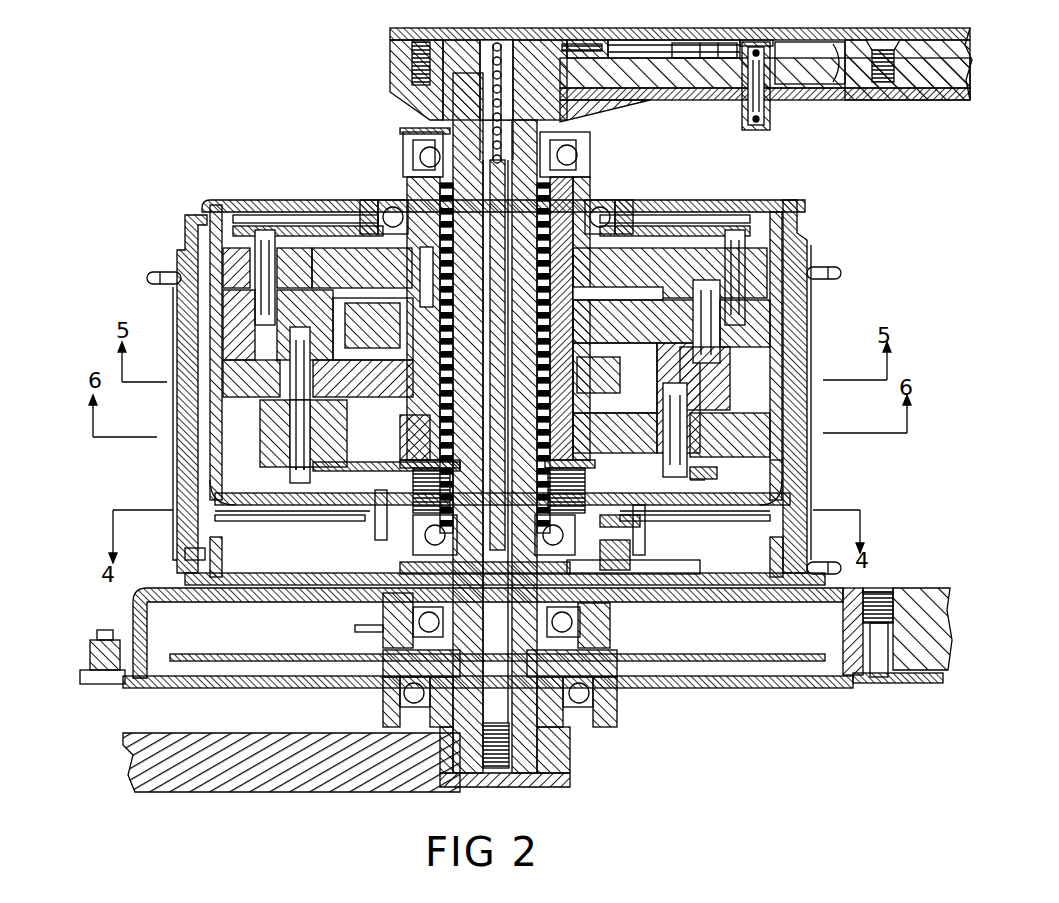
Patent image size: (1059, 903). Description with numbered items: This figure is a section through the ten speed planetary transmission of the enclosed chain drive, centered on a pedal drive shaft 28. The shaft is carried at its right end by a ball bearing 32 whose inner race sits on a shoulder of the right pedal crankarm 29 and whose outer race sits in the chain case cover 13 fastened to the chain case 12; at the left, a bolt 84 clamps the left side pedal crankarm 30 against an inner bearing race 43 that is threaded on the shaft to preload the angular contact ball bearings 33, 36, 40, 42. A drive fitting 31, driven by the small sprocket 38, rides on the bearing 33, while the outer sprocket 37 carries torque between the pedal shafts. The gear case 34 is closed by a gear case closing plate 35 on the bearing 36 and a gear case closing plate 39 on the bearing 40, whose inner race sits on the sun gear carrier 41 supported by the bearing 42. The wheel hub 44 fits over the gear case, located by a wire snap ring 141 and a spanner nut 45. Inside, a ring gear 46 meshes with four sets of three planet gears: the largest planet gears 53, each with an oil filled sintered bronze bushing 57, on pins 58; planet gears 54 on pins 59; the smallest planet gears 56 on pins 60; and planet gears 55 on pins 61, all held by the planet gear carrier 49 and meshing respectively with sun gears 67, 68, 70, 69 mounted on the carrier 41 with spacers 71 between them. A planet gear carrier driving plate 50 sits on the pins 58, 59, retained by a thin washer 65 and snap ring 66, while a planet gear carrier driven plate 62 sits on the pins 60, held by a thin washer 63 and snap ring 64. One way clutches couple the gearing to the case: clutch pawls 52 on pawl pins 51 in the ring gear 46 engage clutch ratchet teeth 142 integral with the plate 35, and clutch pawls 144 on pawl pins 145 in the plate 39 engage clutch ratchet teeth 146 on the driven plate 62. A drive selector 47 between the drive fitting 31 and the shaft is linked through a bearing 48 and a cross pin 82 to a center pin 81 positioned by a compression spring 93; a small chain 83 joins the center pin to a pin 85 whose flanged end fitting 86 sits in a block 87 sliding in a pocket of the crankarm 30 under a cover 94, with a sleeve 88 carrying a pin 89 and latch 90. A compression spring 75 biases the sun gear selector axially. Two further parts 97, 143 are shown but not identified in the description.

The chain case 12 is at (190, 602).
The chain case cover 13 is at (235, 690).
The pedal drive shaft 28 is at (560, 742).
The right pedal crankarm 29 is at (572, 782).
The left side pedal crankarm 30 is at (392, 80).
The drive fitting 31 is at (620, 612).
The ball bearing 32 is at (605, 700).
The angular contact ball bearing 33 is at (575, 625).
The gear case 34 is at (215, 518).
The gear case closing plate 35 is at (240, 575).
The angular contact ball bearing 36 is at (395, 608).
The outer sprocket 37 is at (740, 655).
The small sprocket 38 is at (365, 630).
The gear case closing plate 39 is at (282, 196).
The angular contact ball bearing 40 is at (388, 200).
The sun gear carrier 41 is at (405, 140).
The angular contact ball bearing 42 is at (580, 157).
The inner bearing race 43 is at (430, 130).
The wheel hub 44 is at (836, 268).
The spanner nut 45 is at (808, 215).
The ring gear 46 is at (235, 472).
The drive selector 47 is at (445, 560).
The bearing 48 is at (520, 535).
The planet gear carrier 49 is at (350, 440).
The planet gear carrier driving plate 50 is at (360, 466).
The pawl pins 51 is at (640, 560).
The clutch pawls 52 is at (640, 522).
The largest planet gears 53 is at (738, 413).
The planet gears 54 is at (355, 405).
The planet gears 55 is at (808, 300).
The smallest planet gears 56 is at (215, 253).
The oil filled sintered bronze bushing 57 is at (690, 450).
The pin 58 is at (783, 470).
The pin 59 is at (300, 425).
The pin 60 is at (188, 218).
The pin 61 is at (710, 325).
The planet gear carrier driven plate 62 is at (300, 215).
The thin washer 63 is at (235, 205).
The snap ring 64 is at (205, 203).
The thin washer 65 is at (697, 482).
The snap ring 66 is at (720, 475).
The sun gear 67 is at (395, 447).
The sun gear 68 is at (600, 398).
The sun gear 69 is at (628, 344).
The sun gear 70 is at (356, 306).
The spacers 71 is at (578, 295).
The compression spring 75 is at (555, 196).
The center pin 81 is at (500, 588).
The cross pin 82 is at (512, 600).
The small chain 83 is at (560, 110).
The bolt 84 is at (470, 50).
The pin 85 is at (615, 102).
The flanged end fitting 86 is at (640, 92).
The block 87 is at (690, 78).
The sleeve 88 is at (772, 100).
The pin 89 is at (772, 112).
The latch 90 is at (780, 48).
The compression spring 93 is at (420, 168).
The cover 94 is at (836, 68).
The bolt head 97 is at (762, 130).
The wire snap ring 141 is at (810, 566).
The clutch ratchet teeth 142 is at (375, 520).
The part 143 is at (200, 560).
The clutch pawls 144 is at (700, 202).
The pawl pins 145 is at (615, 205).
The clutch ratchet teeth 146 is at (280, 228).